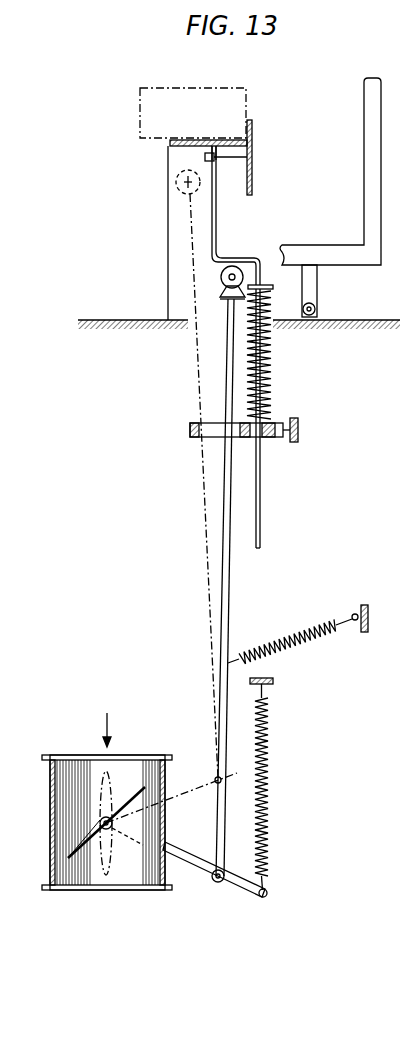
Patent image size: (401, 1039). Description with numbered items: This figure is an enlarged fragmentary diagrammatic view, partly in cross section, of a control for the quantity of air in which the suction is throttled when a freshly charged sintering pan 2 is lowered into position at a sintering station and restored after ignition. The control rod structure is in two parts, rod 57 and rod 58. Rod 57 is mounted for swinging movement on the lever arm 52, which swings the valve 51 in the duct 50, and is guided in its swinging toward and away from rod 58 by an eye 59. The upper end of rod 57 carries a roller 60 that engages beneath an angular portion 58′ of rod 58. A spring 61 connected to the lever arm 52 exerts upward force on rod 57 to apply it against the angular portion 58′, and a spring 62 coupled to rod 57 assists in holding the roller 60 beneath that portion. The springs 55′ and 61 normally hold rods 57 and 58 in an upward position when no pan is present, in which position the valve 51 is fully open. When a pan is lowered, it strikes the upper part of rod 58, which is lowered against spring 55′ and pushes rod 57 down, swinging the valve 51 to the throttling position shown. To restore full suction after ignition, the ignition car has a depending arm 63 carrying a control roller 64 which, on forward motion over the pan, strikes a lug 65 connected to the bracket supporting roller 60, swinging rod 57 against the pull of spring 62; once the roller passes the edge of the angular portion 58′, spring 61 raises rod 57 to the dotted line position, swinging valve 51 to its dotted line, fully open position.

The enclosure (phantom) 2 is at (146, 106).
The rod 58 is at (218, 210).
The angular portion 58′ is at (248, 260).
The roller 60 is at (176, 182).
The lug 65 is at (227, 300).
The depending arm 63 is at (364, 175).
The control roller 64 is at (318, 308).
The spring 55′ is at (272, 370).
The eye 59 is at (189, 430).
The rod 57 is at (222, 612).
The spring 62 is at (322, 626).
The spring 61 is at (270, 746).
The duct 50 is at (50, 778).
The valve 51 is at (72, 852).
The lever arm 52 is at (202, 868).